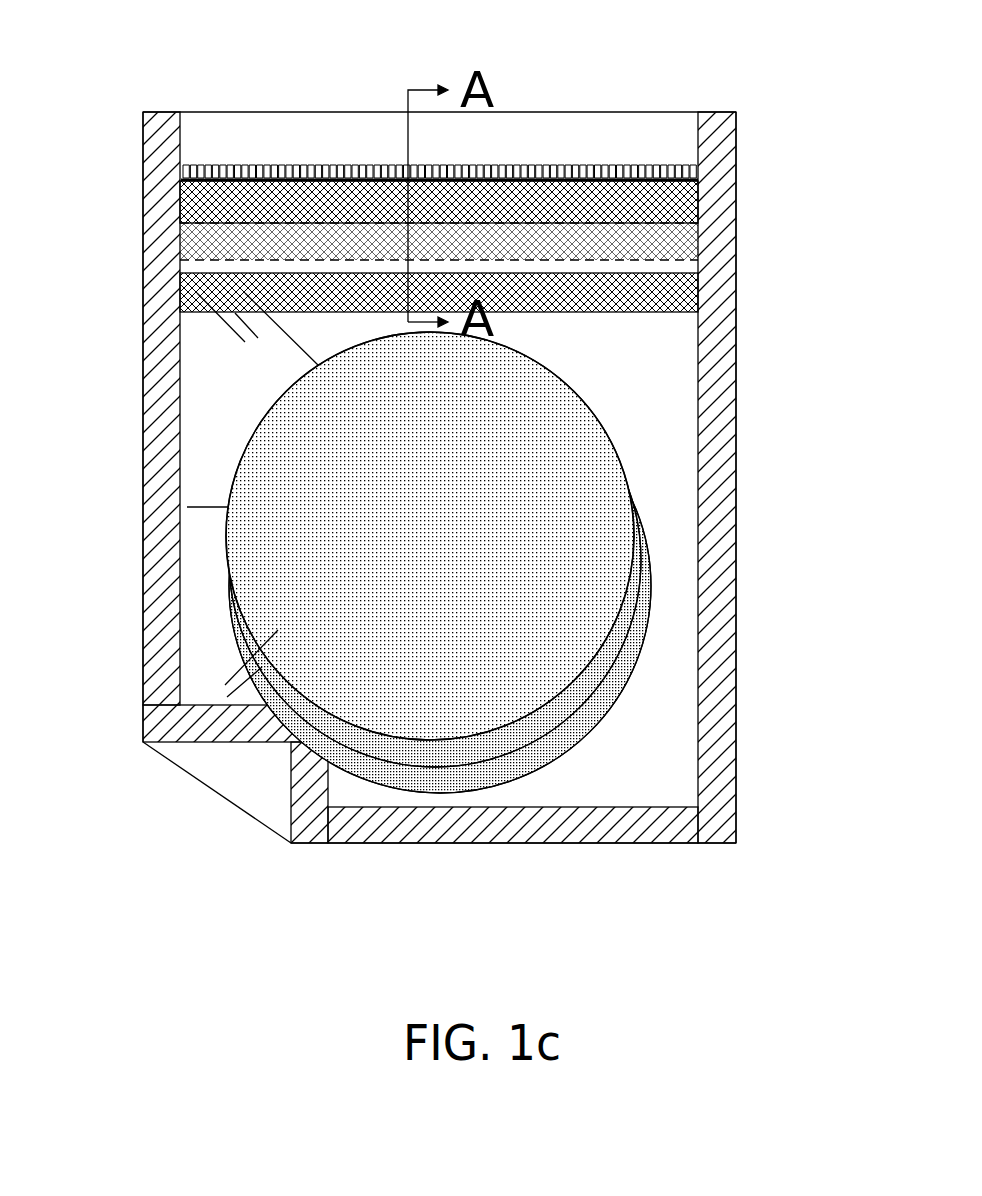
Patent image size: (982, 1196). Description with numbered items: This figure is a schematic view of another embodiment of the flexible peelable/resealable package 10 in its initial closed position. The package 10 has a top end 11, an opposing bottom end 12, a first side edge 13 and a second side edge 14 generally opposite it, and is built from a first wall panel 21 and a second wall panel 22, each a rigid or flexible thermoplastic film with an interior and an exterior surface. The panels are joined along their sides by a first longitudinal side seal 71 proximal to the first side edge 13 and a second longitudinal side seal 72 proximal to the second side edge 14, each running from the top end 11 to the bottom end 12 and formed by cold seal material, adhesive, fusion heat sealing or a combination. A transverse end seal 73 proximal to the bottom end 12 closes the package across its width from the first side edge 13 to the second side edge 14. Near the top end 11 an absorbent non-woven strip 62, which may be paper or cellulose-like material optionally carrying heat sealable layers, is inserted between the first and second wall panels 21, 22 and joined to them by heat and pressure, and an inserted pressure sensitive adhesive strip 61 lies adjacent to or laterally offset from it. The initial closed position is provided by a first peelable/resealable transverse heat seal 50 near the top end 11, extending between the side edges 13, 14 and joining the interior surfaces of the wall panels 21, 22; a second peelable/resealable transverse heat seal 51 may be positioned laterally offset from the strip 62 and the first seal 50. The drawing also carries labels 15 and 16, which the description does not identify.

The flexible peelable/resealable package 10 is at (321, 108).
The top end 11 is at (550, 108).
The bottom end 12 is at (677, 830).
The first side edge 13 is at (143, 480).
The second side edge 14 is at (736, 483).
The spherical lens 15 is at (677, 598).
The lens layers 16 is at (567, 647).
The first wall panel 21 is at (205, 650).
The second wall panel 22 is at (255, 765).
The first peelable/resealable transverse heat seal 50 is at (673, 200).
The second peelable/resealable transverse heat seal 51 is at (687, 302).
The pressure sensitive adhesive strip 61 is at (202, 162).
The absorbent non-woven strip 62 is at (218, 253).
The first longitudinal side seal 71 is at (162, 395).
The second longitudinal side seal 72 is at (718, 355).
The transverse end seal 73 is at (570, 826).